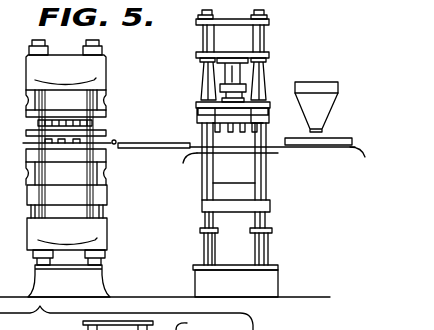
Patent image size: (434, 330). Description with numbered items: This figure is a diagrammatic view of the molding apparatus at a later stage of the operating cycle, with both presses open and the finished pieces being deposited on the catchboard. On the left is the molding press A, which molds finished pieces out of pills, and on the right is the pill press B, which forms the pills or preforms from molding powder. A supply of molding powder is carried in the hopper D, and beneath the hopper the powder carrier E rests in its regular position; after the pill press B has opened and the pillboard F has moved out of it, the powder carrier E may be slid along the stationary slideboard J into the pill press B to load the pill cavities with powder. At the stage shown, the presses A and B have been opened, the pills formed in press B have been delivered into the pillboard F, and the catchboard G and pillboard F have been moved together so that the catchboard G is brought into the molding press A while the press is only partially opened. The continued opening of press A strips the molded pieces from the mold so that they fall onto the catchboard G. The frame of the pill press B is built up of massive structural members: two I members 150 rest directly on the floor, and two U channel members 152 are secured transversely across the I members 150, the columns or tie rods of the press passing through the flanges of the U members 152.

The molding press A is at (106, 82).
The pill press B is at (263, 43).
The hopper D is at (334, 105).
The powder carrier E is at (340, 138).
The pillboard F is at (147, 149).
The catchboard G is at (103, 141).
The slideboard J is at (335, 148).
The I members 150 is at (279, 276).
The U channel members 152 is at (250, 250).